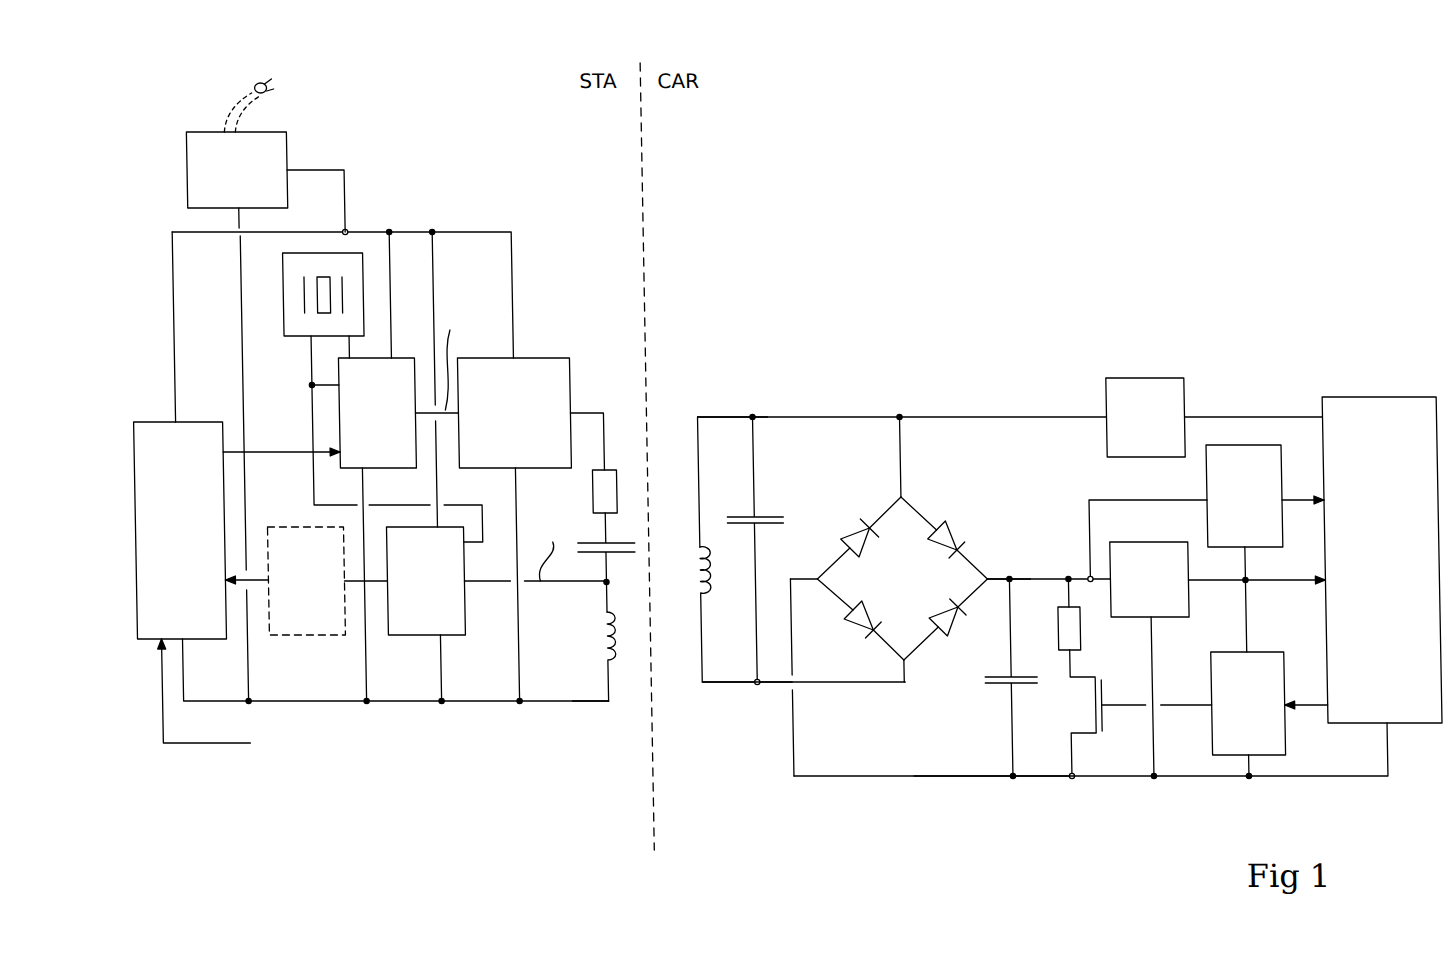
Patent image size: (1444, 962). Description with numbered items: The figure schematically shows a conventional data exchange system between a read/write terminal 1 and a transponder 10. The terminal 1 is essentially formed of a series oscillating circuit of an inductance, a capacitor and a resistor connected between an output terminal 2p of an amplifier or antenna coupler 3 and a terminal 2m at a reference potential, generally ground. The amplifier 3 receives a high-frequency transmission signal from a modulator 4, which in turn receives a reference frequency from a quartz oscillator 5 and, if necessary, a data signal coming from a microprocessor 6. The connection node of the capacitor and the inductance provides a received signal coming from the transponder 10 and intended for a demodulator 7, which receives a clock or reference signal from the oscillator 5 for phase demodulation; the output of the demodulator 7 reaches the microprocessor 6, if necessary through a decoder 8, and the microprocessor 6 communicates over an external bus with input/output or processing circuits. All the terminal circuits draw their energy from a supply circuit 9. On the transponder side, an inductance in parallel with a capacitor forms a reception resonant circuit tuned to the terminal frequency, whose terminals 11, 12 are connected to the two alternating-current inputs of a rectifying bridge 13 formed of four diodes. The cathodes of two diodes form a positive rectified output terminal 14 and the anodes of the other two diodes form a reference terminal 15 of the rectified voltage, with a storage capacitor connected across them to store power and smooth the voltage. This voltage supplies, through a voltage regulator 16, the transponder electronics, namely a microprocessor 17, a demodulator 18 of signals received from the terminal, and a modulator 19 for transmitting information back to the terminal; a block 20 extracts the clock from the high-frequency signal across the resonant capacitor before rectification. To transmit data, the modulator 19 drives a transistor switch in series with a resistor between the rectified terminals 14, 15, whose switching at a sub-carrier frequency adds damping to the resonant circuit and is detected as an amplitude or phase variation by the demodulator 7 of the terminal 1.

The read/write terminal 1 is at (506, 128).
The output terminal of amplifier 2p is at (585, 413).
The reference potential terminal 2m is at (549, 703).
The amplifier or antenna coupler 3 is at (541, 358).
The modulator 4 is at (402, 358).
The quartz oscillator 5 is at (277, 338).
The microprocessor 6 is at (192, 420).
The demodulator 7 is at (386, 636).
The decoder 8 is at (289, 636).
The supply circuit 9 is at (284, 135).
The transponder 10 is at (1046, 140).
The terminal of resonant circuit 11 is at (745, 417).
The terminal of resonant circuit 12 is at (745, 684).
The rectifying bridge 13 is at (902, 583).
The positive rectified output terminal 14 is at (998, 578).
The reference terminal 15 is at (946, 778).
The voltage regulator 16 is at (1177, 604).
The microprocessor 17 is at (1363, 397).
The demodulator 18 is at (1274, 470).
The modulator 19 is at (1256, 652).
The clock extraction block 20 is at (1151, 378).